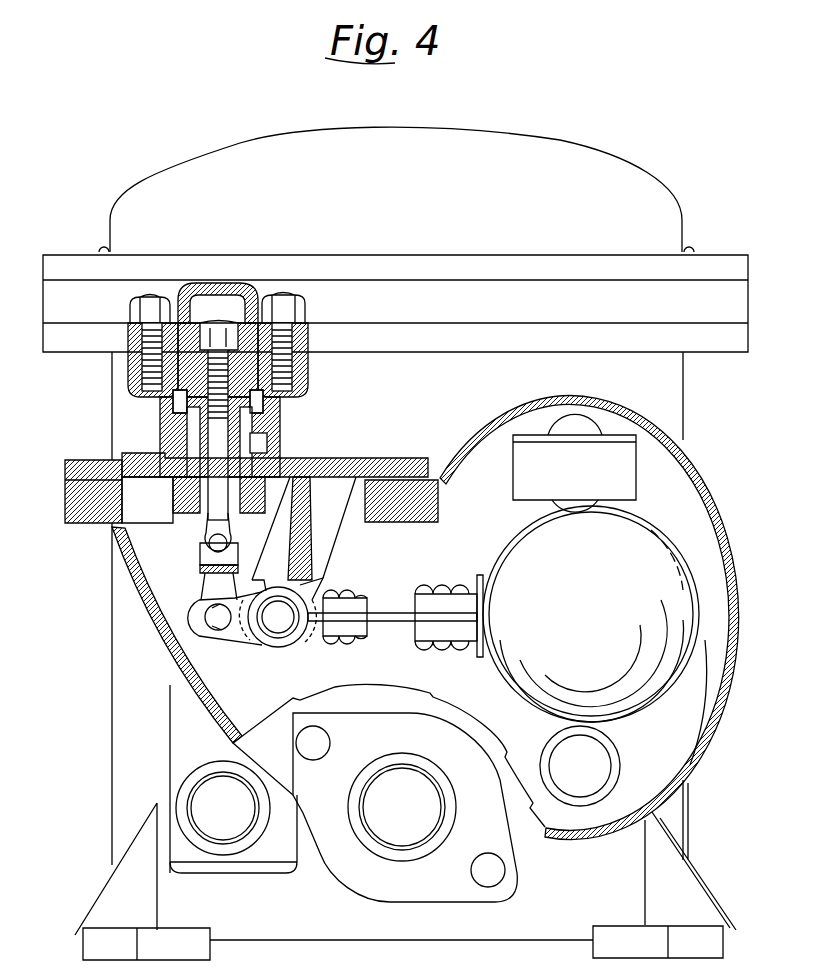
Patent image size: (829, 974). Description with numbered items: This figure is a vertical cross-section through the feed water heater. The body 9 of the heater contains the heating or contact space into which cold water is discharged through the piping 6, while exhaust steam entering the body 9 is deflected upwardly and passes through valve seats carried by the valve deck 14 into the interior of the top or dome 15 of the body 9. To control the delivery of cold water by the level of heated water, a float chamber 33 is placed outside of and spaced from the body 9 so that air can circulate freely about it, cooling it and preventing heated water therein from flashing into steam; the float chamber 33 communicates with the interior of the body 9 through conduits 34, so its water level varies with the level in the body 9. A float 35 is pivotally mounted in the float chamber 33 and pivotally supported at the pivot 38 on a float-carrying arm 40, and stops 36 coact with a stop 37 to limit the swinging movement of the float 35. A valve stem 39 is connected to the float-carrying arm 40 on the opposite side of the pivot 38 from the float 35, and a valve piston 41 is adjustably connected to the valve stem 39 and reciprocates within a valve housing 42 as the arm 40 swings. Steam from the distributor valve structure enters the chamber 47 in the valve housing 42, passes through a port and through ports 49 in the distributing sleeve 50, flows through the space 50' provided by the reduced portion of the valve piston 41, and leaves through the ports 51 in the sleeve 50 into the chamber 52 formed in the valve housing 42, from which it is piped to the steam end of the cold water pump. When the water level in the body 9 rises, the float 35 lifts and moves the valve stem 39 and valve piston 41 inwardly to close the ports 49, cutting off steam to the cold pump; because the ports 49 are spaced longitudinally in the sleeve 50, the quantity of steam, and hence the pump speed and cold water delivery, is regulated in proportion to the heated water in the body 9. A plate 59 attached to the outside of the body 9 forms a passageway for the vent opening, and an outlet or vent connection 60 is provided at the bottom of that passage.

The piping 6 is at (375, 827).
The body 9 is at (672, 393).
The valve deck 14 is at (706, 290).
The top or dome 15 is at (510, 146).
The float chamber 33 is at (720, 703).
The conduits 34 is at (577, 430).
The float 35 is at (677, 588).
The stops 36 is at (267, 567).
The stop 37 is at (308, 523).
The pivot 38 is at (278, 622).
The valve stem 39 is at (200, 368).
The float-carrying arm 40 is at (384, 620).
The valve piston 41 is at (230, 383).
The valve housing 42 is at (292, 411).
The chamber 47 is at (258, 413).
The ports 49 is at (193, 415).
The distributing sleeve 50 is at (184, 527).
The space 50' is at (148, 500).
The ports 51 is at (180, 445).
The chamber 52 is at (120, 480).
The plate 59 is at (188, 748).
The outlet or vent connection 60 is at (205, 795).